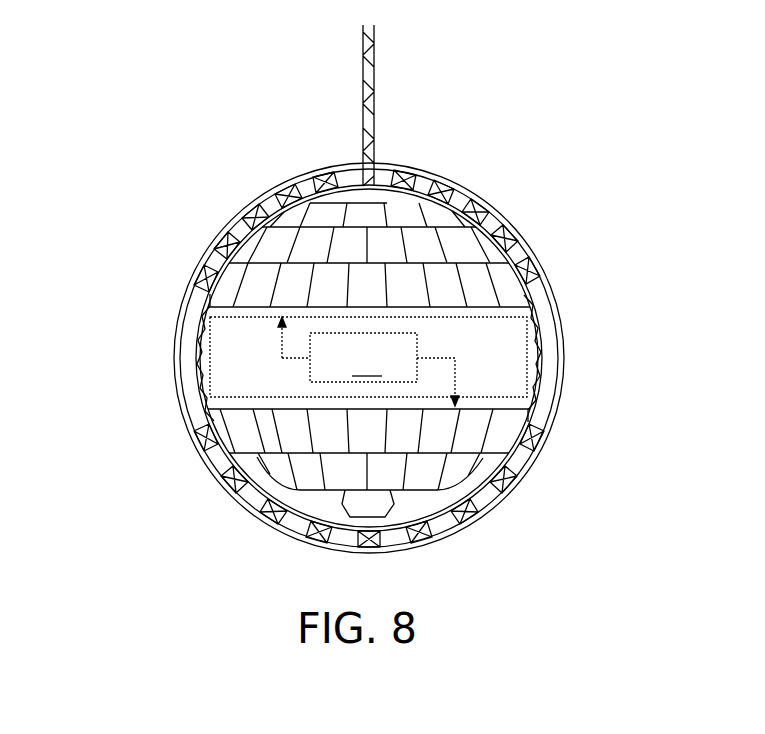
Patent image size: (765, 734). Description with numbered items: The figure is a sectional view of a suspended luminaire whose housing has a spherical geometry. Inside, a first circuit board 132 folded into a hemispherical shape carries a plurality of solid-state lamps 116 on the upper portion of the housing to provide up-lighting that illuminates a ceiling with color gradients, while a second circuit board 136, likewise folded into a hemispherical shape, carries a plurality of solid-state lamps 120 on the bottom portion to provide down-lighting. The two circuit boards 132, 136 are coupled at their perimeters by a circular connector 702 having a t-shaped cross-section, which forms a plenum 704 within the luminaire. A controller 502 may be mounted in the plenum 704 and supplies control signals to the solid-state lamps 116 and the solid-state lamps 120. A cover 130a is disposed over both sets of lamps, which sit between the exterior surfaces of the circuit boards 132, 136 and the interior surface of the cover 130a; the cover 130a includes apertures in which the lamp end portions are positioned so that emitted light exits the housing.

The solid-state lamps 116 is at (188, 277).
The solid-state lamps 120 is at (220, 487).
The cover 130a is at (562, 317).
The first circuit board 132 is at (368, 210).
The second circuit board 136 is at (413, 498).
The controller 502 is at (368, 357).
The circular connector 702 is at (533, 360).
The plenum 704 is at (237, 338).